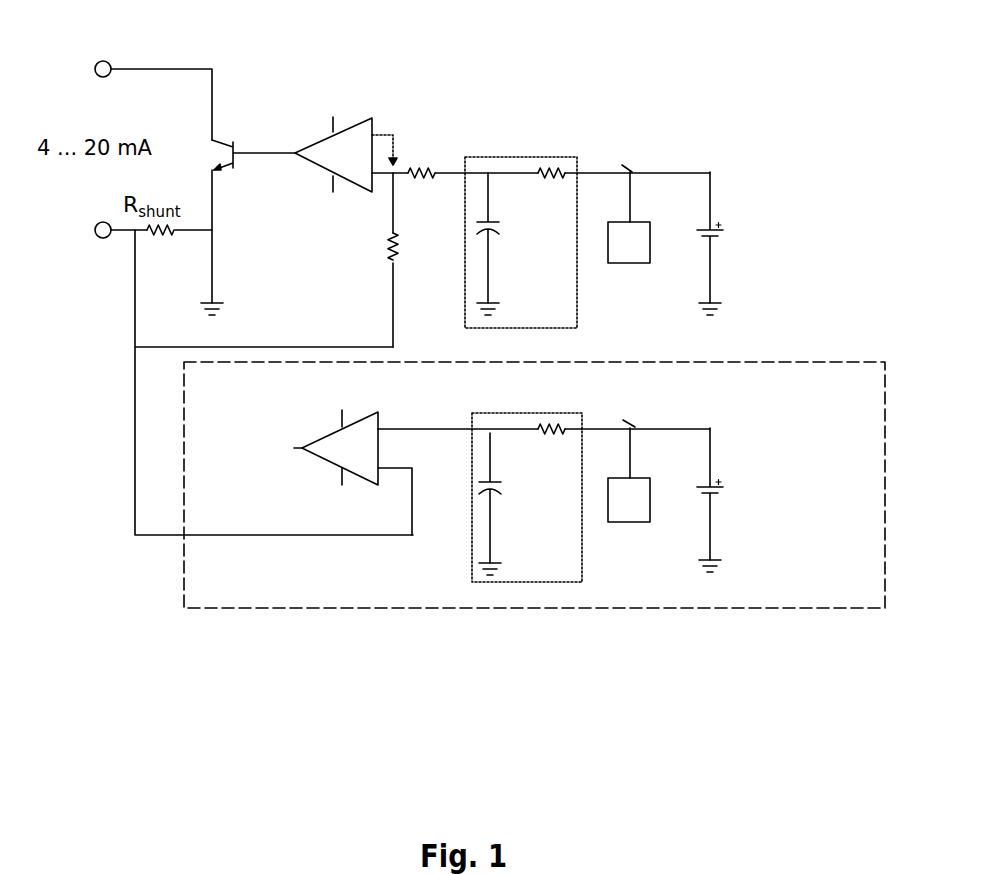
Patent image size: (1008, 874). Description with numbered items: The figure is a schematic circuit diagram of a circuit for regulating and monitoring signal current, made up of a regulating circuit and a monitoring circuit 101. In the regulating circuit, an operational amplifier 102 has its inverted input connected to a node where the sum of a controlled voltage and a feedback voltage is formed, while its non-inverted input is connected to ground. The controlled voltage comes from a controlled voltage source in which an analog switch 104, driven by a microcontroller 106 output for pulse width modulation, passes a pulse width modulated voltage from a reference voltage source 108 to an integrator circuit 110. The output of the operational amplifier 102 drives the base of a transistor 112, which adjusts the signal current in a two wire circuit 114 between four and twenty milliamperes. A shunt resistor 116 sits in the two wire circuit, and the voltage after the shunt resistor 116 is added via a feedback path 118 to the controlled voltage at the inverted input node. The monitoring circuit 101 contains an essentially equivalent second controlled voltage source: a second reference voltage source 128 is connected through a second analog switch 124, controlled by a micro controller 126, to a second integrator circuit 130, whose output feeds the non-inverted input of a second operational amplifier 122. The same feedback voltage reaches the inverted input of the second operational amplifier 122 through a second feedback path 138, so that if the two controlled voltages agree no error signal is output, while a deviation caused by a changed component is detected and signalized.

The monitoring circuit 101 is at (807, 609).
The operational amplifier 102 is at (347, 135).
The analog switch 104 is at (632, 165).
The first reference unit 106 is at (638, 235).
The reference voltage source 108 is at (713, 223).
The integrator circuit 110 is at (520, 157).
The transistor 112 is at (237, 145).
The two wire circuit 114 is at (140, 70).
The shunt resistor 116 is at (170, 233).
The feedback path 118 is at (258, 345).
The second operational amplifier 122 is at (369, 437).
The second analog switch 124 is at (633, 420).
The micro controller 126 is at (628, 495).
The second reference voltage source 128 is at (718, 480).
The integrator circuit 130 is at (508, 583).
The second feedback path 138 is at (282, 530).